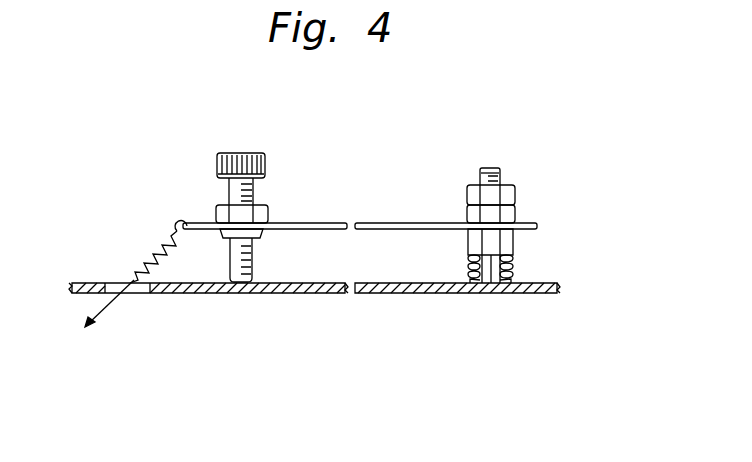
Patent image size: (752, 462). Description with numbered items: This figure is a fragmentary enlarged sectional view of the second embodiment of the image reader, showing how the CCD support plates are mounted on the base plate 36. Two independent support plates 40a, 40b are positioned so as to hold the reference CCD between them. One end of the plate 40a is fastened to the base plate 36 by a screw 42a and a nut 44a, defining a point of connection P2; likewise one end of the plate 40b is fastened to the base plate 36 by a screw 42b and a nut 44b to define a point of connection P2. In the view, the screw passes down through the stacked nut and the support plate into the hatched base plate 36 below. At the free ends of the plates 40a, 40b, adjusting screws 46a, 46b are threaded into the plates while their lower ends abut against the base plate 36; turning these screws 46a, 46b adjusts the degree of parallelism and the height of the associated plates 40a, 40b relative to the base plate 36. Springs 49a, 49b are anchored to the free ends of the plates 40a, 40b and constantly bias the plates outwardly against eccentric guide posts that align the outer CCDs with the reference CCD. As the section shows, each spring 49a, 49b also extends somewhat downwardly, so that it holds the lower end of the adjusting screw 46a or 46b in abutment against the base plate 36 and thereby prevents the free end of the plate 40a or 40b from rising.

The base plate 36 is at (202, 294).
The support plate 40a is at (360, 197).
The support plate 40b is at (375, 223).
The screw 42a is at (553, 179).
The screw 42b is at (503, 174).
The nut 44a is at (561, 210).
The nut 44b is at (517, 200).
The adjusting screw 46a is at (217, 201).
The adjusting screw 46b is at (229, 196).
The spring 49a is at (139, 260).
The spring 49b is at (137, 246).
The point of connection P2 is at (492, 163).